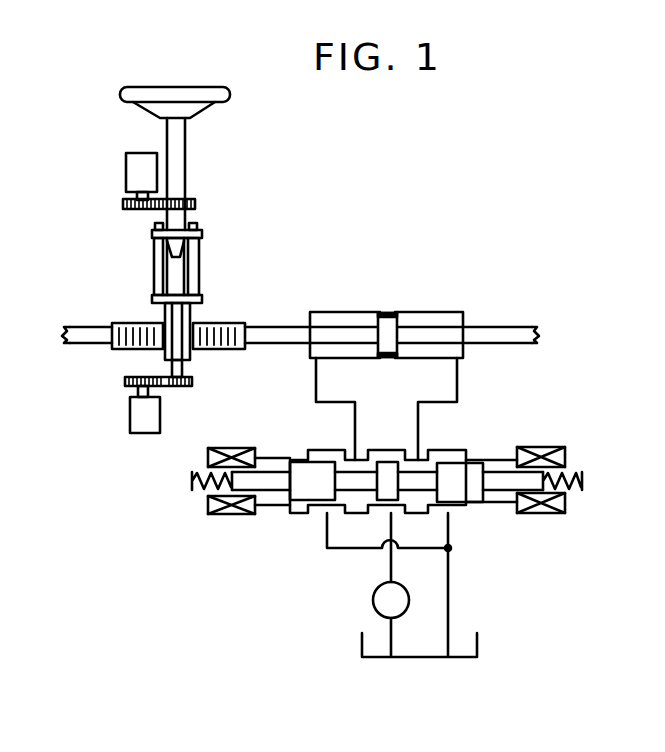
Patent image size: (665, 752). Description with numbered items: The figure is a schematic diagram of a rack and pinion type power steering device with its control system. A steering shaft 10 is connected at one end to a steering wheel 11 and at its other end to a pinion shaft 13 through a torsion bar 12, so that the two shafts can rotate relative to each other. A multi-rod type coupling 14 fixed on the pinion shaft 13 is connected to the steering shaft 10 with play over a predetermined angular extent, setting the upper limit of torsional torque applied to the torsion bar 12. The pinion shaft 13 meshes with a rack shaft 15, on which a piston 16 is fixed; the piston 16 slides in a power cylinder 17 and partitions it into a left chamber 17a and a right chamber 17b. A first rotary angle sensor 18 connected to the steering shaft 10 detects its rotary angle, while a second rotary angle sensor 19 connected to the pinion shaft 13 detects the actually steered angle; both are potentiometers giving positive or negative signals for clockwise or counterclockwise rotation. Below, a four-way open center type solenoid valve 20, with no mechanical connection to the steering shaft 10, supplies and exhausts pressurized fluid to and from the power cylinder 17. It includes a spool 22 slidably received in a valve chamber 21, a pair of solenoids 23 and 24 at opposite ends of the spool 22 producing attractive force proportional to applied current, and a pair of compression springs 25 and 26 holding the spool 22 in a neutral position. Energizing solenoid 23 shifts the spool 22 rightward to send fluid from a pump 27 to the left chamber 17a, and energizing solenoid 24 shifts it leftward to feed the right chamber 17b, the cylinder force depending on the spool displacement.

The steering shaft 10 is at (186, 170).
The steering wheel 11 is at (184, 94).
The torsion bar 12 is at (179, 272).
The pinion shaft 13 is at (187, 350).
The multi-rod type coupling 14 is at (157, 259).
The rack shaft 15 is at (132, 345).
The piston 16 is at (389, 313).
The power cylinder 17 is at (420, 357).
The left chamber 17a is at (323, 313).
The right chamber 17b is at (462, 348).
The first rotary angle sensor 18 is at (126, 172).
The second rotary angle sensor 19 is at (143, 425).
The solenoid valve 20 is at (395, 536).
The valve chamber 21 is at (279, 460).
The spool 22 is at (325, 494).
The solenoid 23 is at (543, 513).
The solenoid 24 is at (231, 515).
The compression spring 25 is at (582, 481).
The compression spring 26 is at (192, 481).
The pump 27 is at (373, 603).